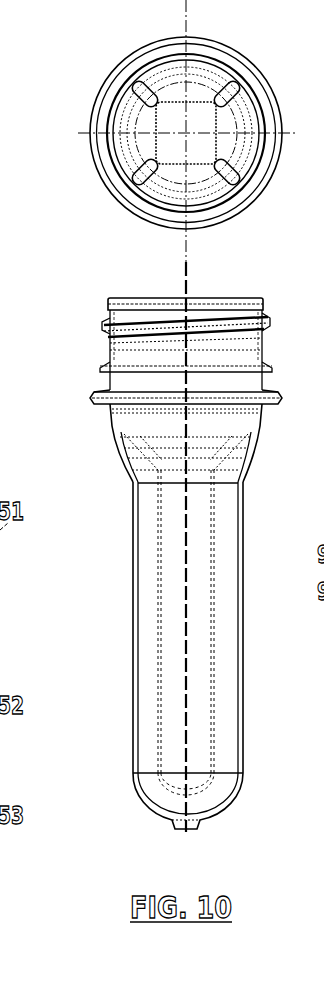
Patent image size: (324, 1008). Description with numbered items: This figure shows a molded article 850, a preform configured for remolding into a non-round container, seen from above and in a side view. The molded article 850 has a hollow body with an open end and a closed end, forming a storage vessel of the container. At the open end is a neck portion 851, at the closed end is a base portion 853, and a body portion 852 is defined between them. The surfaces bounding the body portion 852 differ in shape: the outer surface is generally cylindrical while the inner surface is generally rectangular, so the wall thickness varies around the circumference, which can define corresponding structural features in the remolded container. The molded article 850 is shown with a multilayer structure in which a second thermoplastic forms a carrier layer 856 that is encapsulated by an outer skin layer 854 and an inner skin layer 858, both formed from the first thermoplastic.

The molded article 850 is at (118, 263).
The neck portion 851 is at (227, 343).
The body portion 852 is at (252, 512).
The base portion 853 is at (227, 811).
The outer skin layer 854 is at (125, 582).
The carrier layer 856 is at (133, 610).
The inner skin layer 858 is at (143, 597).